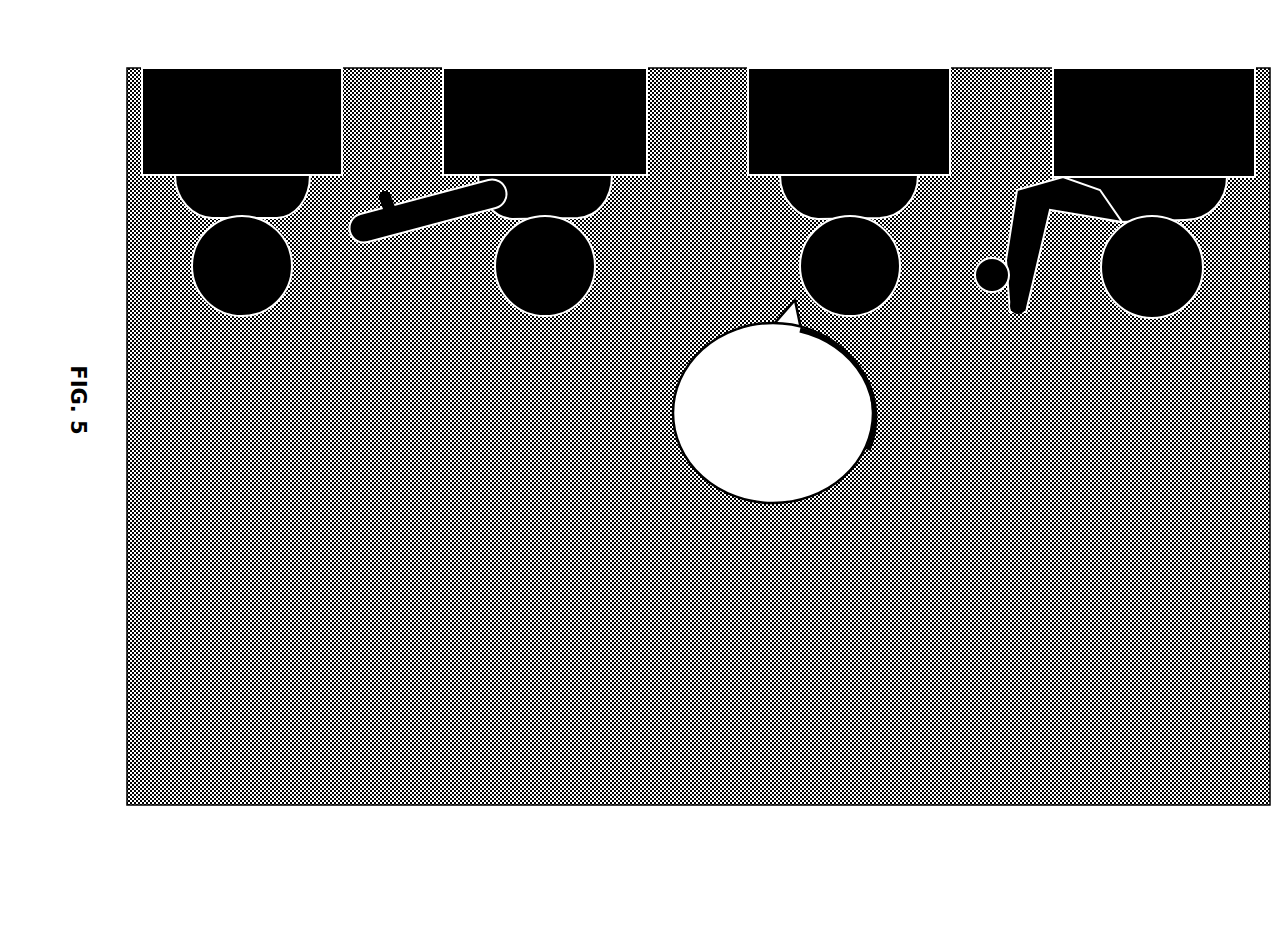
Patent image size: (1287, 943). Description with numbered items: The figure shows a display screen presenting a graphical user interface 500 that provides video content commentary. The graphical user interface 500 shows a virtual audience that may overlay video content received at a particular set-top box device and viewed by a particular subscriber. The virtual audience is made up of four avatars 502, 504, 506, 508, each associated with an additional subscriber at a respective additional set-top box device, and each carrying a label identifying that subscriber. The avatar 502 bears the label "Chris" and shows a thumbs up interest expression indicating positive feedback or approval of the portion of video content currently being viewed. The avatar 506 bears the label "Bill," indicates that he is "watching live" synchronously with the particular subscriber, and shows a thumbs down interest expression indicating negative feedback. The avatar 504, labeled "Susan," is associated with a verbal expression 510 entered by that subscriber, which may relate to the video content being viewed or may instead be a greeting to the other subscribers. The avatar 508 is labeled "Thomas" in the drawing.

The graphical user interface 500 is at (1124, 772).
The avatar 502 is at (1238, 68).
The avatar 504 is at (933, 68).
The avatar 506 is at (630, 68).
The avatar 508 is at (323, 68).
The verbal expression 510 is at (687, 334).